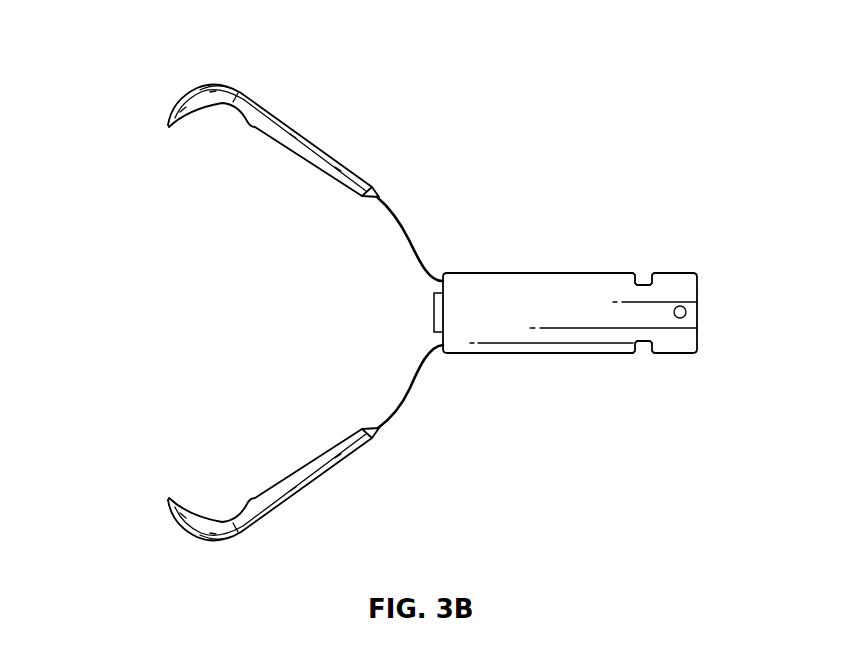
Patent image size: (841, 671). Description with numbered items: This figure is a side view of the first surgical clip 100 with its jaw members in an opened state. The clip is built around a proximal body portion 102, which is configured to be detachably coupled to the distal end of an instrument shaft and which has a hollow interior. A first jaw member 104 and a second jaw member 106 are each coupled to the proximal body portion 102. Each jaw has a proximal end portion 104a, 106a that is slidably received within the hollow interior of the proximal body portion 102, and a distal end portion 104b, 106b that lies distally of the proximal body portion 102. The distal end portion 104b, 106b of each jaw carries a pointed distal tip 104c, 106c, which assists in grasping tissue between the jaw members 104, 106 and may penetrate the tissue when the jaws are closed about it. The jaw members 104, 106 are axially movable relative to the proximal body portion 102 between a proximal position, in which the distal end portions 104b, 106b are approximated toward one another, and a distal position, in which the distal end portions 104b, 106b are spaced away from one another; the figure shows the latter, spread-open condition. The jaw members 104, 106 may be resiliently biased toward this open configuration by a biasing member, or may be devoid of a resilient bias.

The first surgical clip 100 is at (134, 43).
The proximal body portion 102 is at (565, 337).
The first jaw member 104 is at (271, 113).
The proximal end portion 104a is at (375, 188).
The distal end portion 104b is at (211, 82).
The pointed distal tip 104c is at (167, 127).
The second jaw member 106 is at (300, 495).
The proximal end portion 106a is at (400, 409).
The distal end portion 106b is at (213, 538).
The pointed distal tip 106c is at (167, 498).